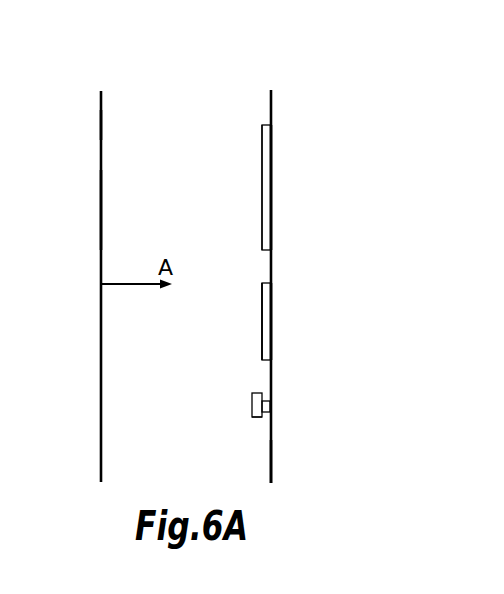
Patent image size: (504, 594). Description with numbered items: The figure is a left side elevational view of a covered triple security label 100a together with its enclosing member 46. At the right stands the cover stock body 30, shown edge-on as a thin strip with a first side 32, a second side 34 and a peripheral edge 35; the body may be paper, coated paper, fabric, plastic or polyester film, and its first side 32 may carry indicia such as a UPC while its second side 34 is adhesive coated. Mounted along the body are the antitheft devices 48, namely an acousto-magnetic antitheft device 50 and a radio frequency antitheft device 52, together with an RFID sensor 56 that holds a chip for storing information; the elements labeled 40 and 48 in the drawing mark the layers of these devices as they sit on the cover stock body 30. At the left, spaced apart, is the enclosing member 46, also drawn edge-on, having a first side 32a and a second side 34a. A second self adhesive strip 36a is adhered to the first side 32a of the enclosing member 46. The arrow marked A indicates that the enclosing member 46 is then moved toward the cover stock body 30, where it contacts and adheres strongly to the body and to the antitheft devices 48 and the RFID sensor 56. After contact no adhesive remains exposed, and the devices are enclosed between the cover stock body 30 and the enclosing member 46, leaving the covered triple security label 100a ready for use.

The covered triple security label 100a is at (300, 112).
The cover stock body 30 is at (273, 184).
The first side 32 is at (273, 323).
The first side 32a is at (103, 100).
The second side 34 is at (270, 102).
The second side 34a is at (101, 196).
The peripheral edge 35 is at (273, 470).
The second self adhesive strip 36a is at (103, 226).
The label layer 40 is at (266, 308).
The enclosing member 46 is at (101, 120).
The antitheft device 48 is at (262, 200).
The acousto-magnetic antitheft device 50 is at (252, 398).
The radio frequency antitheft device 52 is at (266, 170).
The RFID sensor 56 is at (262, 340).